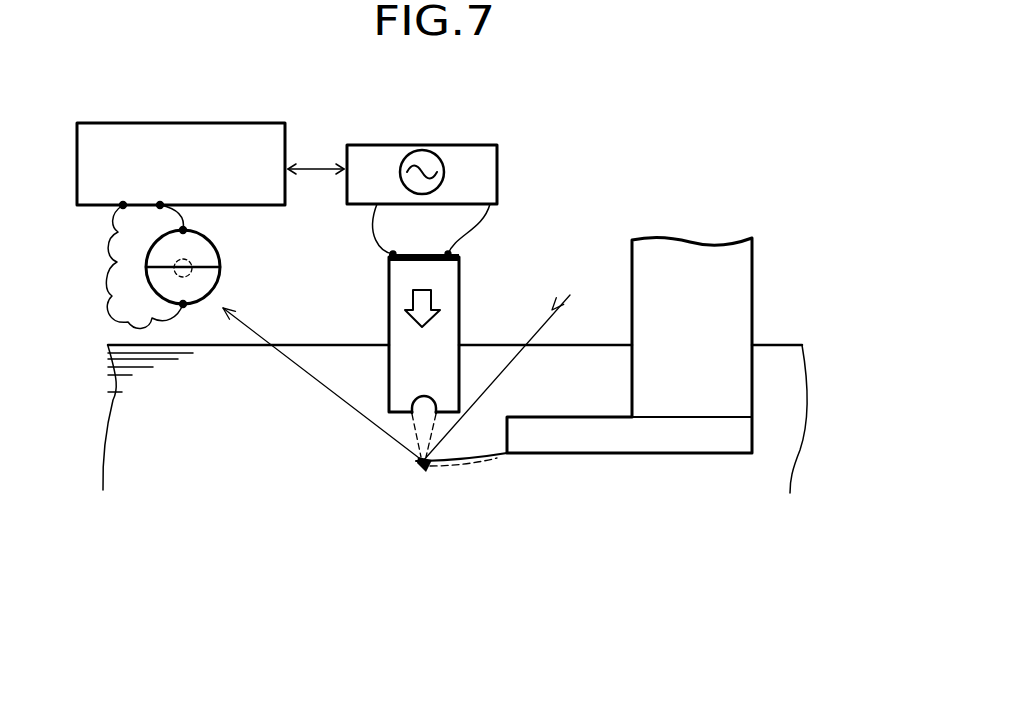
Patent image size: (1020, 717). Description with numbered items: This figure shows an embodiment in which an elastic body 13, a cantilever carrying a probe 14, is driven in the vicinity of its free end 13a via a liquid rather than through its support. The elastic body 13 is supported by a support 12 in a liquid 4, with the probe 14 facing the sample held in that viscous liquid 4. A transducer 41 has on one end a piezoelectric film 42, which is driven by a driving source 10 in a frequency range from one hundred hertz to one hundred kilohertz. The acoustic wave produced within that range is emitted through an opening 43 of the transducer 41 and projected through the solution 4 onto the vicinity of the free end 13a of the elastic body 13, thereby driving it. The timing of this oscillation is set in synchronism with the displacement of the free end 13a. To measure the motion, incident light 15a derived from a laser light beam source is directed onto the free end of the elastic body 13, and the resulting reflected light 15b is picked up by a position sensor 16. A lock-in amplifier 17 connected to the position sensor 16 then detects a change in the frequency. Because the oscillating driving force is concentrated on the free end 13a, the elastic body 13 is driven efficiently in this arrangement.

The liquid 4 is at (112, 388).
The driving source 10 is at (498, 170).
The support 12 is at (620, 443).
The elastic body 13 is at (496, 460).
The free end 13a is at (418, 462).
The probe 14 is at (427, 472).
The incident light 15a is at (538, 331).
The reflected light 15b is at (252, 330).
The position sensor 16 is at (220, 253).
The lock-in amplifier 17 is at (279, 129).
The transducer 41 is at (392, 300).
The piezoelectric film 42 is at (447, 249).
The opening 43 is at (417, 402).